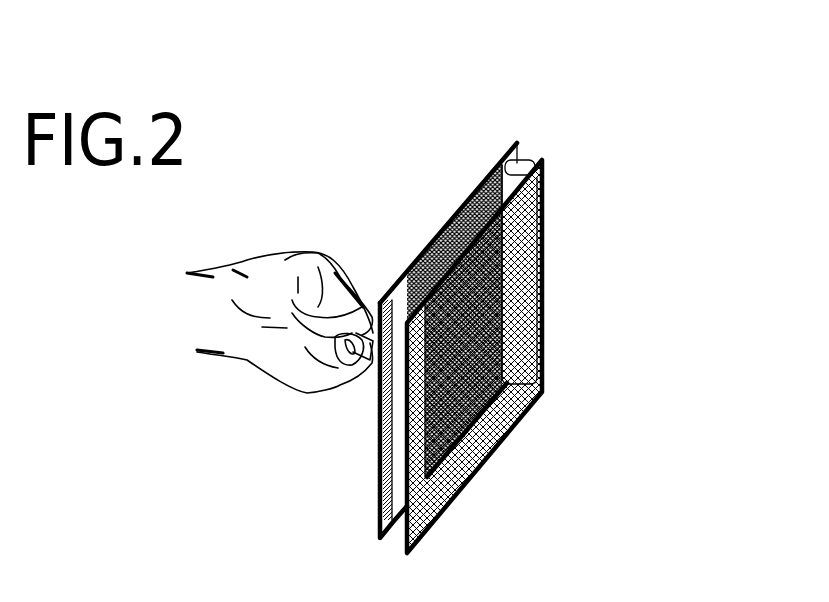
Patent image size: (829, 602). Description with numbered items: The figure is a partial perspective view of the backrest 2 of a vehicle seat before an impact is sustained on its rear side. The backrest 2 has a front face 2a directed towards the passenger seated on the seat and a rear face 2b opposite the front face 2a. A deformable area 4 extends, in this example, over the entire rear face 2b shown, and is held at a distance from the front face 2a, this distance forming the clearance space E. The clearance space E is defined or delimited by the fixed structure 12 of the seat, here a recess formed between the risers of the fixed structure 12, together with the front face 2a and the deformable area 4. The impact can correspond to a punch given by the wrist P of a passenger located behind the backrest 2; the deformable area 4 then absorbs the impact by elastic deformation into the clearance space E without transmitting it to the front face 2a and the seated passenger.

The backrest 2 is at (660, 305).
The front face 2a is at (512, 410).
The rear face 2b is at (403, 276).
The deformable area 4 is at (492, 162).
The fixed structure 12 is at (510, 172).
The clearance space E is at (444, 226).
The wrist P is at (223, 322).